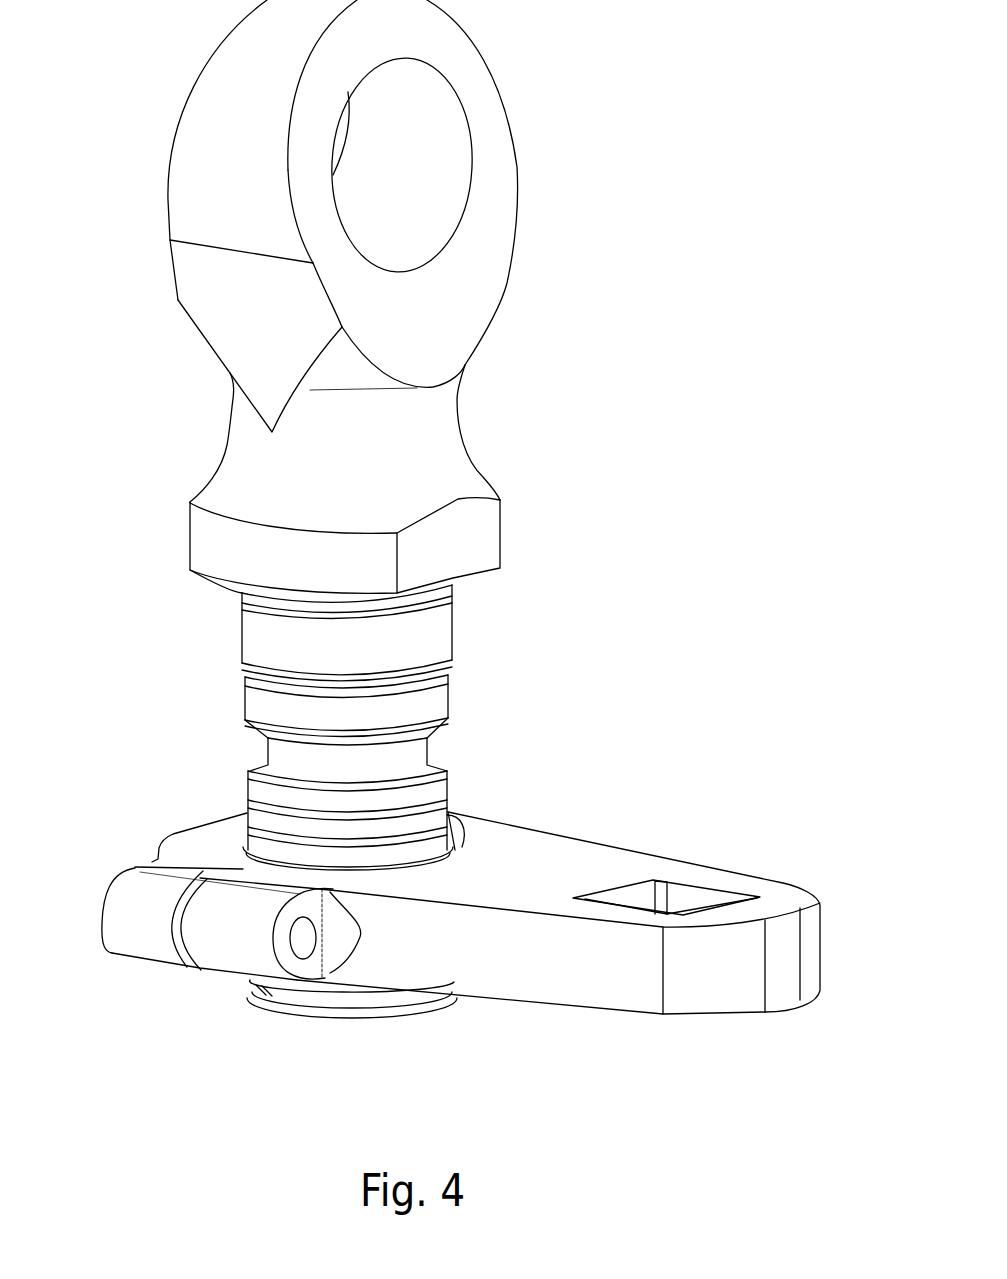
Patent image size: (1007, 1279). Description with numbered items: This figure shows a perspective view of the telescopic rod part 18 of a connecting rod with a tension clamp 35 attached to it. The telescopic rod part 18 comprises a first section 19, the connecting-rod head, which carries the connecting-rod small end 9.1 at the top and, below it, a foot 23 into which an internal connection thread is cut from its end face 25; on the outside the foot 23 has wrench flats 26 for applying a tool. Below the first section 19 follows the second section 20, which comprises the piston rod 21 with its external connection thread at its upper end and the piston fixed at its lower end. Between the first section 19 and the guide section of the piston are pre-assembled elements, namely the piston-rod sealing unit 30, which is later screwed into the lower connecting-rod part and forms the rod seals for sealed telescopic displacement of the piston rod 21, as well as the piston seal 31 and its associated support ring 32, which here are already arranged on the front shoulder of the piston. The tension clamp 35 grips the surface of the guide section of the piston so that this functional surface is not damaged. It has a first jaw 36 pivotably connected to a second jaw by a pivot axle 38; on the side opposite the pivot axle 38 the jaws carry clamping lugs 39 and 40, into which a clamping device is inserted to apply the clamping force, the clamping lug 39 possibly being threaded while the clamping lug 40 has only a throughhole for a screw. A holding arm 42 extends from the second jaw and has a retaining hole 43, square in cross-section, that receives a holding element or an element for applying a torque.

The connecting-rod small end 9.1 is at (428, 122).
The first section 19 is at (598, 204).
The foot 23 is at (447, 438).
The telescopic rod part 18 is at (628, 513).
The wrench flats 26 is at (490, 538).
The end face 25 is at (210, 583).
The piston-rod sealing unit 30 is at (475, 663).
The second section 20 is at (550, 696).
The piston rod 21 is at (427, 751).
The support ring 32 is at (463, 779).
The pivot axle 38 is at (462, 822).
The piston seal 31 is at (500, 823).
The first jaw 36 is at (205, 838).
The clamping lug 40 is at (222, 952).
The clamping lug 39 is at (137, 948).
The holding arm 42 is at (567, 983).
The tension clamp 35 is at (643, 831).
The retaining hole 43 is at (697, 903).